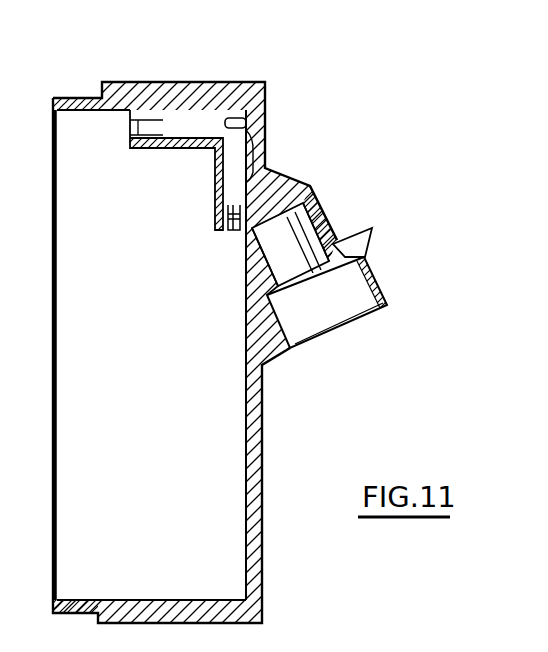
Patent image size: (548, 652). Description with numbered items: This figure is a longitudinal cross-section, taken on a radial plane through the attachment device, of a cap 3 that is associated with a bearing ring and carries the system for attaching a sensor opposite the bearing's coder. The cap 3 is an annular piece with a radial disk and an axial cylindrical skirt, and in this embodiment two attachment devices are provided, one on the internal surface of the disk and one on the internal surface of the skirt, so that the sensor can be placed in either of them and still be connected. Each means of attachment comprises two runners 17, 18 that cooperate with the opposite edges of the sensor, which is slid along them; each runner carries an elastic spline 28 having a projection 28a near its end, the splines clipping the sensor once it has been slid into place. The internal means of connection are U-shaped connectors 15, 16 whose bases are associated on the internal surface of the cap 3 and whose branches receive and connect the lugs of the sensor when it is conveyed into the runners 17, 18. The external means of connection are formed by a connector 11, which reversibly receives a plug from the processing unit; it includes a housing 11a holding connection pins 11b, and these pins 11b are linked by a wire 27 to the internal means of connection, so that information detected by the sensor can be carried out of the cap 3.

The cap 3 is at (151, 82).
The connector 15 is at (305, 133).
The connector 16 is at (268, 97).
The runner 17 is at (172, 130).
The runner 18 is at (181, 130).
The wire 27 is at (260, 232).
The elastic spline 28 is at (195, 257).
The projection 28a is at (233, 236).
The connector 11 is at (366, 302).
The housing 11a is at (343, 290).
The connection pins 11b is at (318, 276).